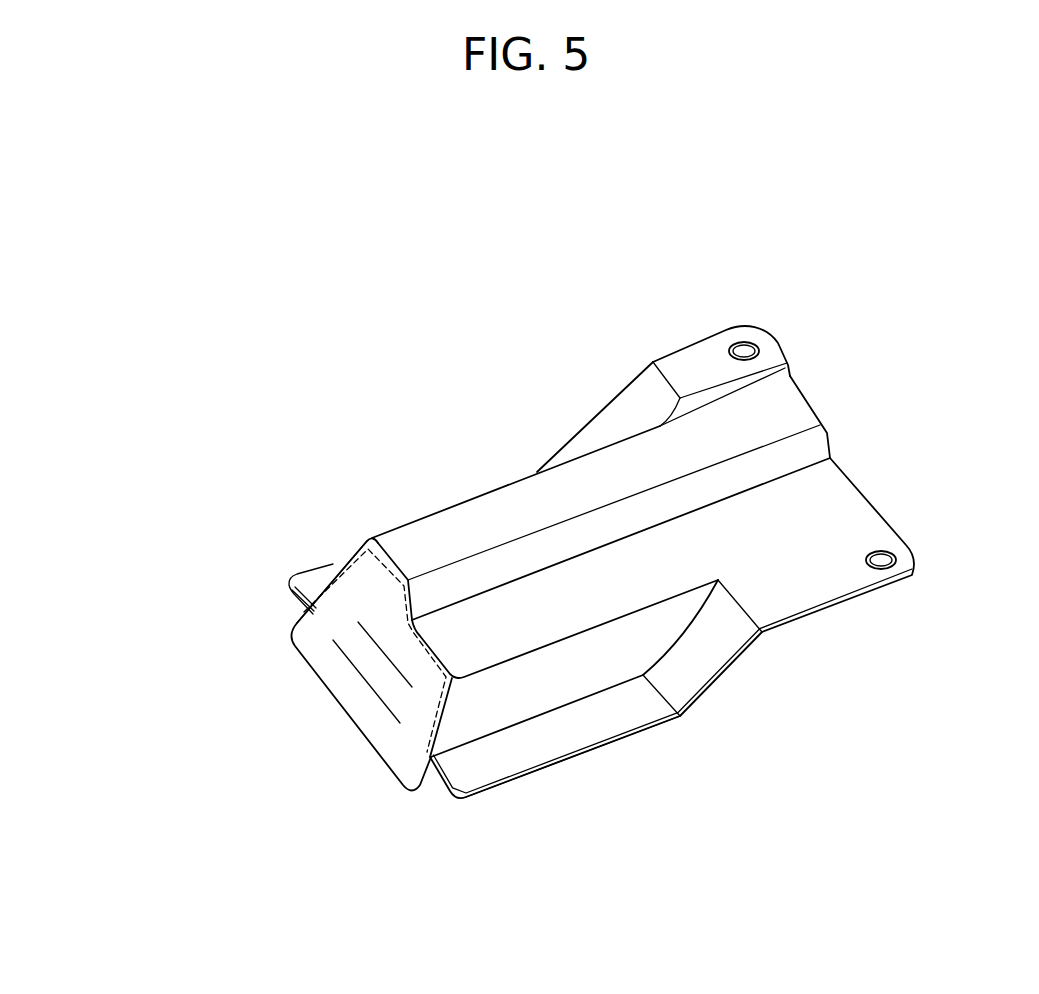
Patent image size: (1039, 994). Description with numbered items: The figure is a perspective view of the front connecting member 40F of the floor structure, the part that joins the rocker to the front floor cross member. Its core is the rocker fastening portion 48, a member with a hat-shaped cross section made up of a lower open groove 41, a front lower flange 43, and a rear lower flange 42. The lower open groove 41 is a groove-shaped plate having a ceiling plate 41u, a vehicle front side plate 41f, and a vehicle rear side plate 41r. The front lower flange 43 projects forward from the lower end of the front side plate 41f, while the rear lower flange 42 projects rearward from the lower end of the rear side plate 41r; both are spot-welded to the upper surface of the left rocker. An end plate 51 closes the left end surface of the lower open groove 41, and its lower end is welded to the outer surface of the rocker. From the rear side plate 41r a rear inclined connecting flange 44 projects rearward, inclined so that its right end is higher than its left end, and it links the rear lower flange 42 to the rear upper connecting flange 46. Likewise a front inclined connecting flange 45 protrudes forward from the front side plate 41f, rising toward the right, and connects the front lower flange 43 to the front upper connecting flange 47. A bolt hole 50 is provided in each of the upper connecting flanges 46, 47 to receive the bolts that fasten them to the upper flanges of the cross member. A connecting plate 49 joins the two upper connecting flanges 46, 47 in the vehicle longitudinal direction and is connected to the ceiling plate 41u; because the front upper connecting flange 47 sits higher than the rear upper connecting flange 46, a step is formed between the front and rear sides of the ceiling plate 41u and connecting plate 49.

The front connecting member 40F is at (262, 307).
The lower open groove 41 is at (507, 692).
The ceiling plate 41u is at (432, 557).
The vehicle front side plate 41f is at (330, 596).
The vehicle rear side plate 41r is at (532, 700).
The rear lower flange 42 is at (573, 735).
The front lower flange 43 is at (321, 564).
The rear inclined connecting flange 44 is at (712, 650).
The front inclined connecting flange 45 is at (595, 415).
The rear upper connecting flange 46 is at (825, 577).
The front upper connecting flange 47 is at (697, 358).
The rocker fastening portion 48 is at (496, 531).
The connecting plate 49 is at (787, 413).
The bolt hole 50 is at (743, 343).
The end plate 51 is at (350, 687).